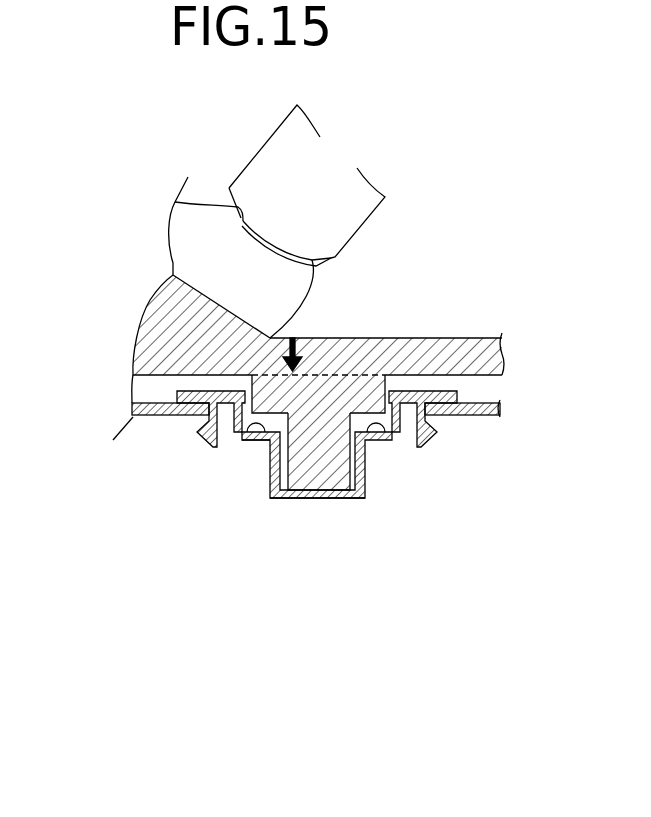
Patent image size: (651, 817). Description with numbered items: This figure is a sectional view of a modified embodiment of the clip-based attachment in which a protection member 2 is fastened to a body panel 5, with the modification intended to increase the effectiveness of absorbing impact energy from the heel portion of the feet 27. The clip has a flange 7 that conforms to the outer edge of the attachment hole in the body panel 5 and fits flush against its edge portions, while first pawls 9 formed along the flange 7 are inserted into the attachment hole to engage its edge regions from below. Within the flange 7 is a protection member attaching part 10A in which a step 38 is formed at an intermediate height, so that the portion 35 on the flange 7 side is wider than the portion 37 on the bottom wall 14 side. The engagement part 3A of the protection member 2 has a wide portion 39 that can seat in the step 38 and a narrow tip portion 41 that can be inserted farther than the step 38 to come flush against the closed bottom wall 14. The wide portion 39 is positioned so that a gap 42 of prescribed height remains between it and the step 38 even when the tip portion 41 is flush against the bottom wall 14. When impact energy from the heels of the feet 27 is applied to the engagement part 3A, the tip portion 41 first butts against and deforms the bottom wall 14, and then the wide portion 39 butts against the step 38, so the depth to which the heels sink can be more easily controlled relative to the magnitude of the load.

The protection member 2 is at (160, 320).
The engagement part 3A is at (367, 372).
The feet 27 is at (298, 294).
The wide portion 39 is at (340, 409).
The tip portion 41 is at (337, 468).
The body panel 5 is at (131, 418).
The flange 7 is at (178, 418).
The first pawls 9 is at (205, 434).
The gap 42 is at (392, 438).
The bottom wall 14 is at (348, 498).
The portion on the flange side 35 is at (238, 447).
The portion on the bottom wall side 37 is at (272, 498).
The step 38 is at (254, 442).
The protection member attaching part 10A is at (315, 508).